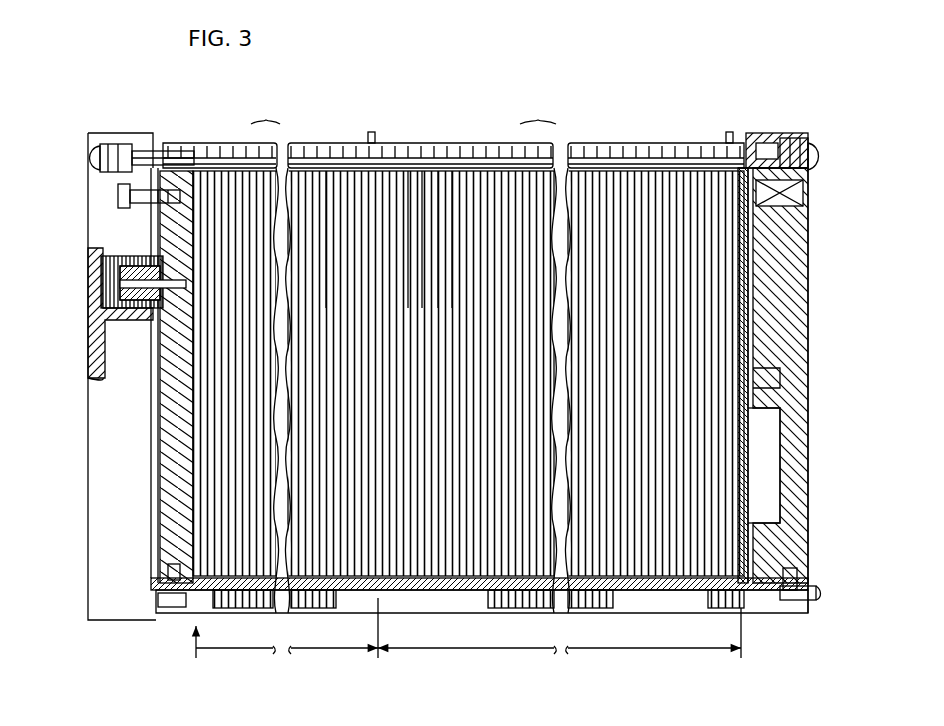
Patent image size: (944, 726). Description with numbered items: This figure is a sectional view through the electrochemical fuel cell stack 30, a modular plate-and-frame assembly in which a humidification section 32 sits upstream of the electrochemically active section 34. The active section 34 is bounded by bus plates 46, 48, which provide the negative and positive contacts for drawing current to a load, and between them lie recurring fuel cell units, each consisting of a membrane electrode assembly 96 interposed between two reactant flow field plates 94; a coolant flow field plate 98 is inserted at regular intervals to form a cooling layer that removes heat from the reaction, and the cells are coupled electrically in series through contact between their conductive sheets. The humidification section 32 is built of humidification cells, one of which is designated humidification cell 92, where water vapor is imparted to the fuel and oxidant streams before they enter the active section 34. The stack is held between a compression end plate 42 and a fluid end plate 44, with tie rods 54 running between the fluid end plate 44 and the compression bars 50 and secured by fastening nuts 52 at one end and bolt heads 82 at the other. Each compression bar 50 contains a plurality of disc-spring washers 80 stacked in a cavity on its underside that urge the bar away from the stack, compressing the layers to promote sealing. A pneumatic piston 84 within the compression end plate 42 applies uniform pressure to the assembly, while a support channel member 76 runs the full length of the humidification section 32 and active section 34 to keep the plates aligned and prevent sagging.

The electrochemical fuel cell stack 30 is at (158, 622).
The humidification section 32 is at (270, 640).
The electrochemically active section 34 is at (545, 640).
The compression end plate 42 is at (748, 128).
The fluid end plate 44 is at (170, 160).
The bus plate 46 is at (363, 128).
The bus plate 48 is at (720, 128).
The compression bar 50 is at (92, 198).
The fastening nut 52 is at (88, 150).
The tie rod 54 is at (160, 148).
The support channel member 76 is at (735, 600).
The disc-spring washer 80 is at (92, 296).
The bolt head 82 is at (808, 140).
The pneumatic piston 84 is at (798, 190).
The humidification cell 92 is at (320, 165).
The reactant flow field plate 94 is at (415, 165).
The membrane electrode assembly 96 is at (430, 165).
The coolant flow field plate 98 is at (445, 165).